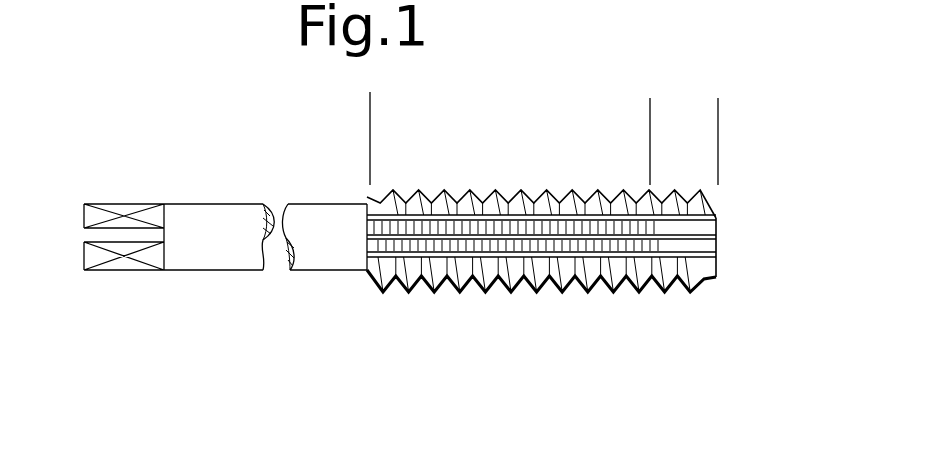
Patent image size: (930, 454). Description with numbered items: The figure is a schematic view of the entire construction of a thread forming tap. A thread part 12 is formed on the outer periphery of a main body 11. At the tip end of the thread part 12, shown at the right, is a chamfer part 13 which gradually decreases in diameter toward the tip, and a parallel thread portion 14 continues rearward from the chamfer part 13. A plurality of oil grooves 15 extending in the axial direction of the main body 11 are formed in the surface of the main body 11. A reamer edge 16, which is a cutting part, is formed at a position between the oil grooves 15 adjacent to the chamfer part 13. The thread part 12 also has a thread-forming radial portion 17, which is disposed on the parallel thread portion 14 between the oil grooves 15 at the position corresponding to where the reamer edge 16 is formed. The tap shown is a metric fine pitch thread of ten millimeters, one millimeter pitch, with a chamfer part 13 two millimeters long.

The main body 11 is at (350, 272).
The thread part 12 is at (500, 296).
The chamfer part 13 is at (716, 110).
The parallel thread portion 14 is at (648, 107).
The oil grooves 15 is at (536, 192).
The reamer edge 16 is at (700, 249).
The thread-forming radial portion 17 is at (437, 192).